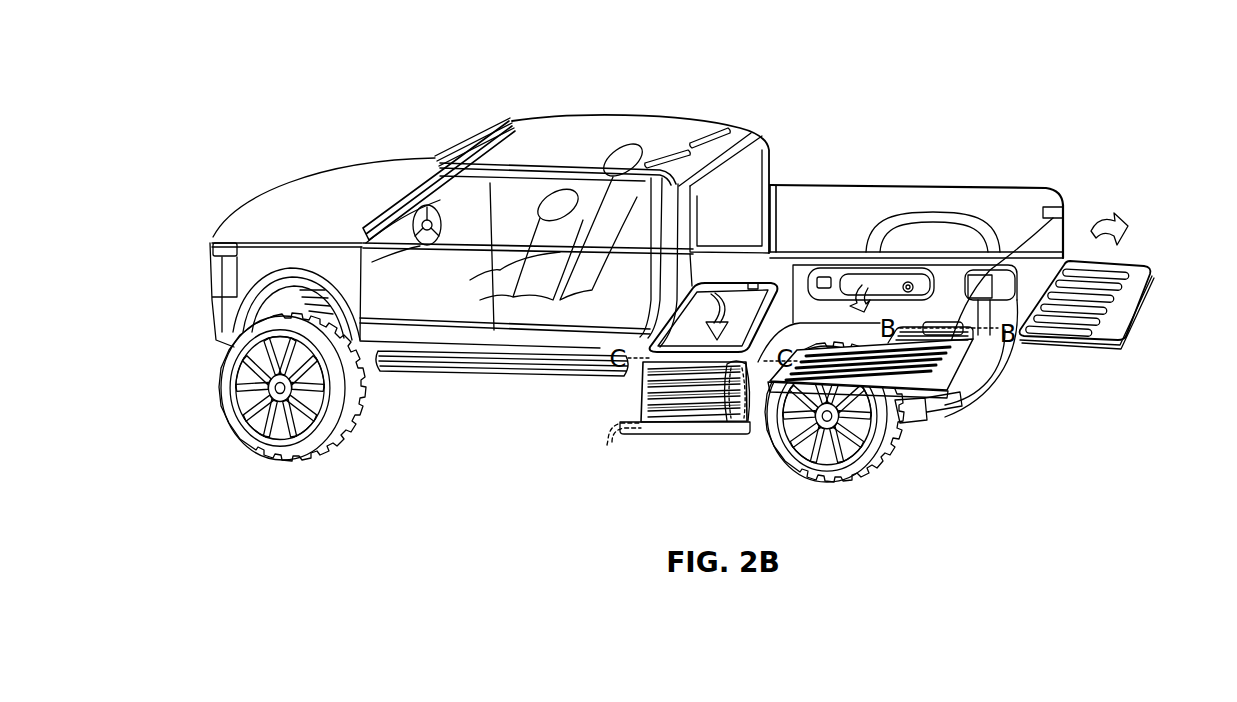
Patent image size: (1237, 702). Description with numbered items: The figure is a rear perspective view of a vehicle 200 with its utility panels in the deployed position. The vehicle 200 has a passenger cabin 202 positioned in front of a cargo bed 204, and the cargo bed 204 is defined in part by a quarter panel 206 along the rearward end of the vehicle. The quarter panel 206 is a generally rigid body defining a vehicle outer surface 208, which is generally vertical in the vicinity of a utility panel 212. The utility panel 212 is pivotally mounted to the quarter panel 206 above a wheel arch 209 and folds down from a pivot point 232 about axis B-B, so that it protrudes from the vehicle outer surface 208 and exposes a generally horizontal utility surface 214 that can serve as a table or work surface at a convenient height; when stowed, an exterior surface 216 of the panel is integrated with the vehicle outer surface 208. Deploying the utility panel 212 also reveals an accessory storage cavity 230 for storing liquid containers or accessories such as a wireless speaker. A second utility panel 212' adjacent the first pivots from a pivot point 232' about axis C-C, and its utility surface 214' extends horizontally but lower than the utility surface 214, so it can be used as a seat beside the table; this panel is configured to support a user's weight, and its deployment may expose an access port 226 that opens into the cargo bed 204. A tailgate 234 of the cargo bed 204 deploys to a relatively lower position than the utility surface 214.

The vehicle 200 is at (370, 74).
The passenger cabin 202 is at (612, 128).
The cargo bed 204 is at (958, 96).
The quarter panel 206 is at (747, 434).
The vehicle outer surface 208 is at (655, 165).
The wheel arch 209 is at (838, 325).
The utility panel 212 is at (940, 423).
The second utility panel 212' is at (609, 458).
The utility surface 214 is at (899, 260).
The utility surface 214' is at (685, 421).
The exterior surface 216 is at (818, 462).
The access port 226 is at (680, 333).
The accessory storage cavity 230 is at (905, 285).
The pivot point 232 is at (1015, 248).
The pivot point 232' is at (789, 212).
The tailgate 234 is at (1127, 283).